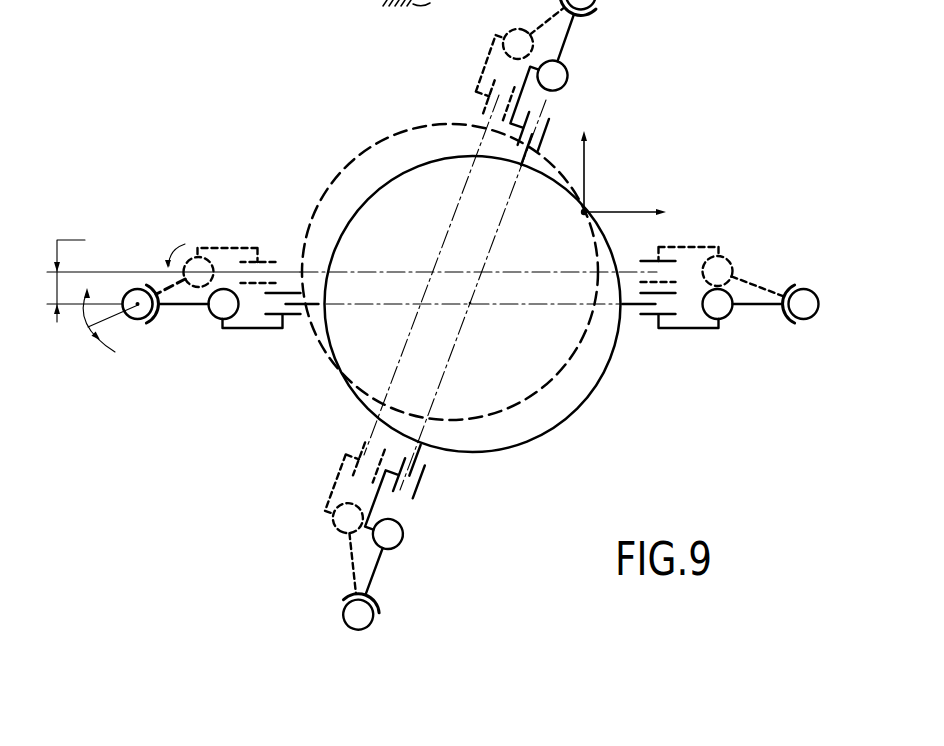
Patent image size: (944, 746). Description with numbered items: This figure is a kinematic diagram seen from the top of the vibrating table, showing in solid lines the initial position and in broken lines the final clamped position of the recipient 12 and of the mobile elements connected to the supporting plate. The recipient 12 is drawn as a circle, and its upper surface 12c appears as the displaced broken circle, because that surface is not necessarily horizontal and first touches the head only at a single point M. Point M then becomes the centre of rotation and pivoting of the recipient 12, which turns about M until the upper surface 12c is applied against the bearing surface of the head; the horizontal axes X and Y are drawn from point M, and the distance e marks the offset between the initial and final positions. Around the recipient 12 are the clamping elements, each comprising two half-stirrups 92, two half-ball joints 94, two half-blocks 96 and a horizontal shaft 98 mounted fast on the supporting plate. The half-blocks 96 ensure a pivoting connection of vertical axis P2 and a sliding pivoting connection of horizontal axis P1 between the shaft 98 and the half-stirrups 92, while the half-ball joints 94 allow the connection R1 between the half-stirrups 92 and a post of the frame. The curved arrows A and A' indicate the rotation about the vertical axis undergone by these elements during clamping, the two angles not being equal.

The recipient 12 is at (545, 452).
The upper surface 12c is at (413, 186).
The half-stirrup 92 is at (184, 306).
The half-ball joint 94 is at (136, 320).
The half-block 96 is at (237, 330).
The horizontal shaft 98 is at (305, 309).
The sliding pivoting connection of horizontal axis P1 is at (651, 322).
The pivoting connection of vertical axis P2 is at (735, 322).
The connection R1 is at (802, 277).
The angle A is at (103, 320).
The angle A' is at (176, 243).
The eccentricity e is at (69, 270).
The point M is at (595, 201).
The X axis X is at (637, 213).
The Y axis Y is at (591, 158).